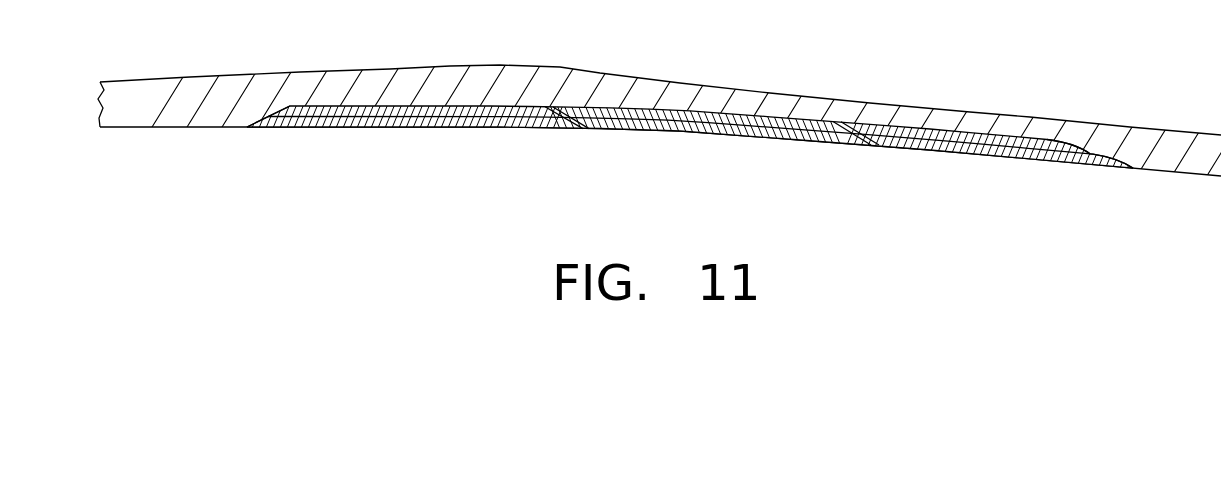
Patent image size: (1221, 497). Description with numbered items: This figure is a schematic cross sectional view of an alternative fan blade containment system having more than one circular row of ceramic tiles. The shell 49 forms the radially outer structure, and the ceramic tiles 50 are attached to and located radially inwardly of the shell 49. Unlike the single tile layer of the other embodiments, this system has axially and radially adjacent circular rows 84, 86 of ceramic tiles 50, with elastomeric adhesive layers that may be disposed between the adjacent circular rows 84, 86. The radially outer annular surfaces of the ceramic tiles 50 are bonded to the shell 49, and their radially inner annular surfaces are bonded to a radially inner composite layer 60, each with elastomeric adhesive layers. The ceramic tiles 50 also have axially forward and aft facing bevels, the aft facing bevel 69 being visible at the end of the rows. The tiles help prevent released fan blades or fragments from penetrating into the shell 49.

The shell 49 is at (596, 73).
The ceramic tiles 50 is at (357, 104).
The radially inner composite layer 60 is at (867, 143).
The aft facing bevel 69 is at (1090, 142).
The circular row of ceramic tiles 84 is at (229, 107).
The circular row of ceramic tiles 86 is at (458, 147).